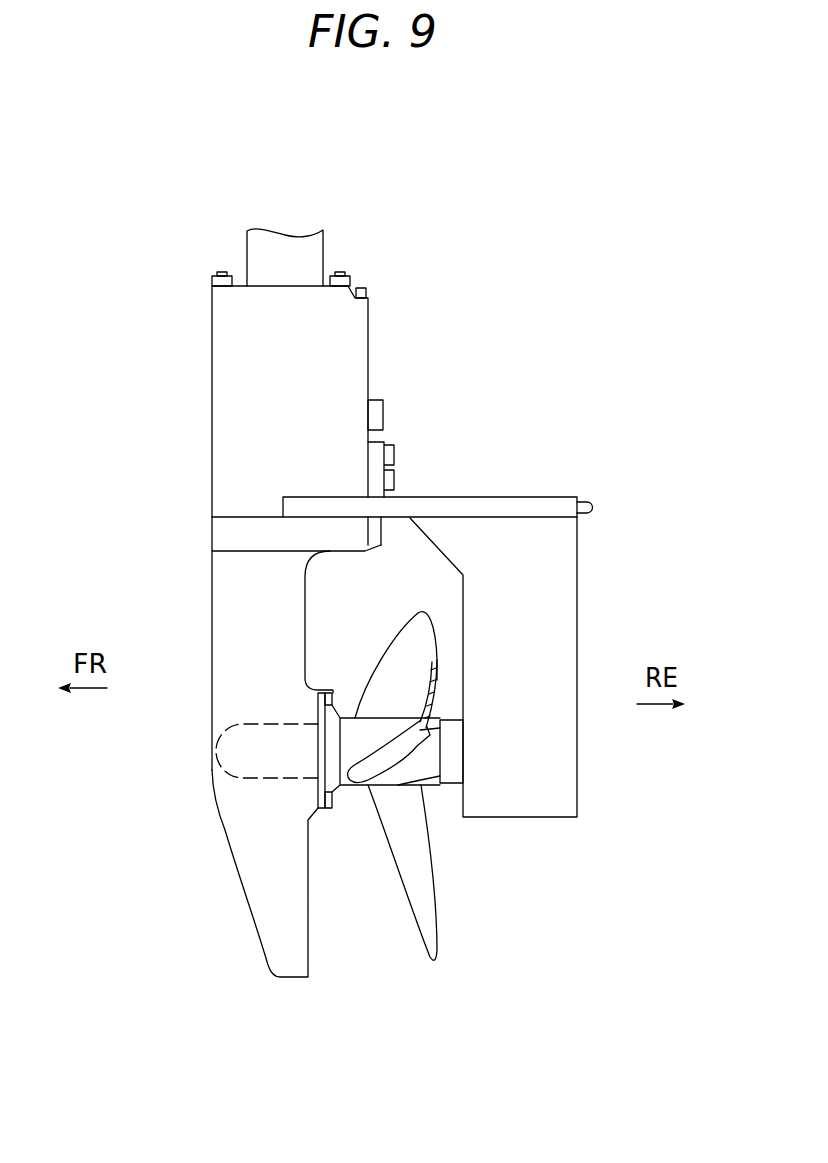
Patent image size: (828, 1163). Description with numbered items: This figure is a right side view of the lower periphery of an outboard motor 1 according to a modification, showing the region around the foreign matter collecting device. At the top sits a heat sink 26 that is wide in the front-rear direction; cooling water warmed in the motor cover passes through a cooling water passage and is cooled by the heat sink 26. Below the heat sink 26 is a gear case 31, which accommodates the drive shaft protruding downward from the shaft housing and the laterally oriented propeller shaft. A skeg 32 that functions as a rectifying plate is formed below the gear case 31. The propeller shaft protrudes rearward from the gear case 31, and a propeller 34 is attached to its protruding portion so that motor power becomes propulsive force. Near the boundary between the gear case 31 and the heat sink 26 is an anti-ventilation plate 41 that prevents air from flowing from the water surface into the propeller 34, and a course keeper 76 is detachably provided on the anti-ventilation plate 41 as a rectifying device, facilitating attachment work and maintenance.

The outboard motor 1 is at (182, 307).
The heat sink 26 is at (368, 343).
The gear case 31 is at (228, 603).
The skeg 32 is at (240, 853).
The propeller 34 is at (396, 629).
The anti-ventilation plate 41 is at (537, 496).
The course keeper 76 is at (577, 618).